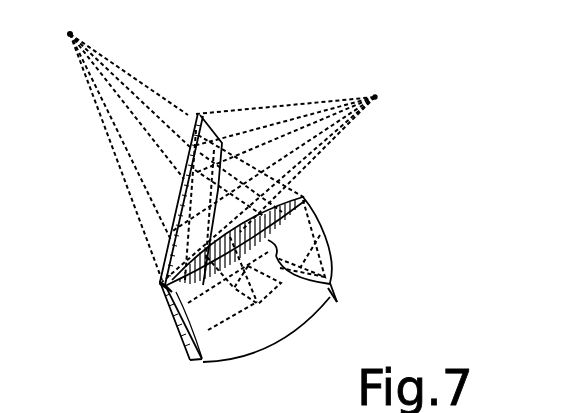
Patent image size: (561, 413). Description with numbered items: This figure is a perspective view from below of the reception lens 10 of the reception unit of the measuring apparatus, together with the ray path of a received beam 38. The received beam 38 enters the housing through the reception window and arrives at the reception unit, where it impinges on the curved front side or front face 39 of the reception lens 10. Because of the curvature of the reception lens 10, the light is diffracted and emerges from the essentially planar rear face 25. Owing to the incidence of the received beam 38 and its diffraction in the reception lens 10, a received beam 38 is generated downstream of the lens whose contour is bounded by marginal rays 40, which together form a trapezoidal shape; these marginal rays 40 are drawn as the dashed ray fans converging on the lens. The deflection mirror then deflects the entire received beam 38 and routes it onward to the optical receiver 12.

The reception lens 10 is at (338, 263).
The optical receiver 12 is at (377, 97).
The rear face 25 is at (285, 196).
The received beam 38 is at (263, 103).
The front face 39 is at (340, 311).
The marginal rays 40 is at (230, 112).